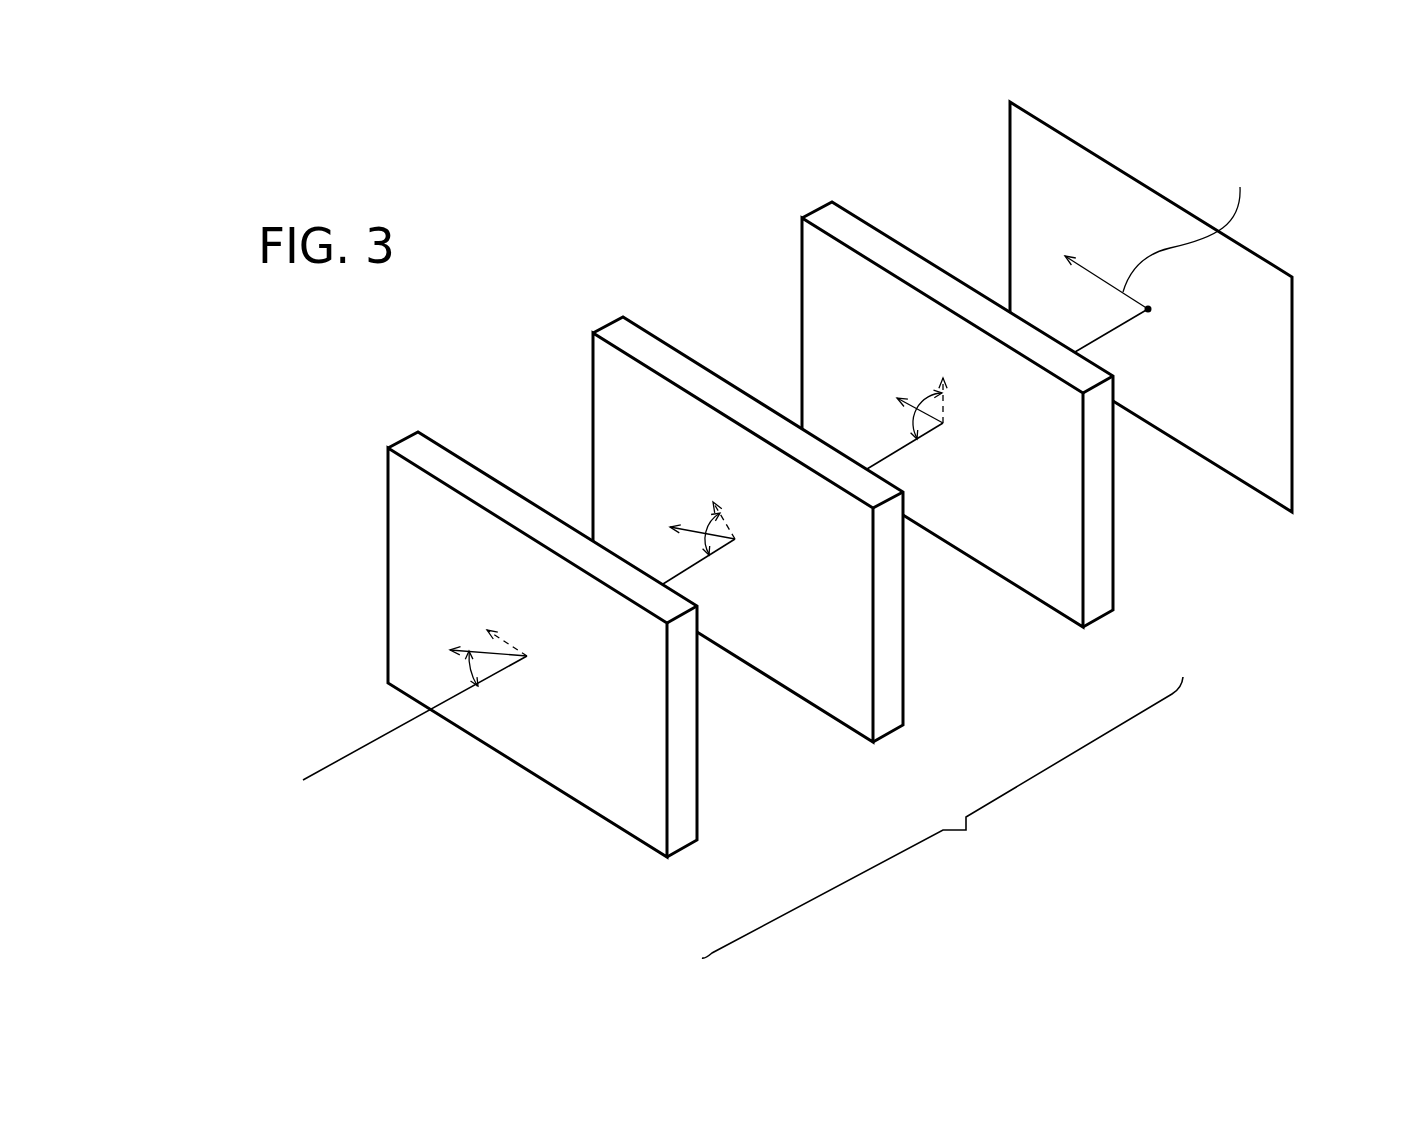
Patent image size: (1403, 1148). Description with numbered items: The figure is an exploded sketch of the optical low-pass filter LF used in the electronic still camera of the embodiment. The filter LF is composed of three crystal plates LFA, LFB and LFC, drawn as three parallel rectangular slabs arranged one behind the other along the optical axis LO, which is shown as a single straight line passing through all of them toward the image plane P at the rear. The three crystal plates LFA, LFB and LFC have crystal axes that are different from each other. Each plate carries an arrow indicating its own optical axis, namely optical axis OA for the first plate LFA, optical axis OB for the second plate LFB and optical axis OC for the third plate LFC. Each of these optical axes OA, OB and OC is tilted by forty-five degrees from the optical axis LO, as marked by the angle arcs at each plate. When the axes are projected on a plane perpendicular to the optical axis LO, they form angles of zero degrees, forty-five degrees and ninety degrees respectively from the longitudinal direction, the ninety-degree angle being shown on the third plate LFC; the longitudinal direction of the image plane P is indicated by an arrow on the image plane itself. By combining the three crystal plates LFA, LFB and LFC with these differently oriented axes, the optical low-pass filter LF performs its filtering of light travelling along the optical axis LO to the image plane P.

The crystal plate LFA is at (683, 832).
The crystal plate LFB is at (888, 715).
The crystal plate LFC is at (1100, 600).
The optical low-pass filter LF is at (942, 817).
The image plane P is at (1187, 423).
The optical axis of crystal plate LFA OA is at (473, 650).
The optical axis of crystal plate LFB OB is at (678, 525).
The optical axis of crystal plate LFC OC is at (898, 398).
The optical axis LO is at (387, 734).